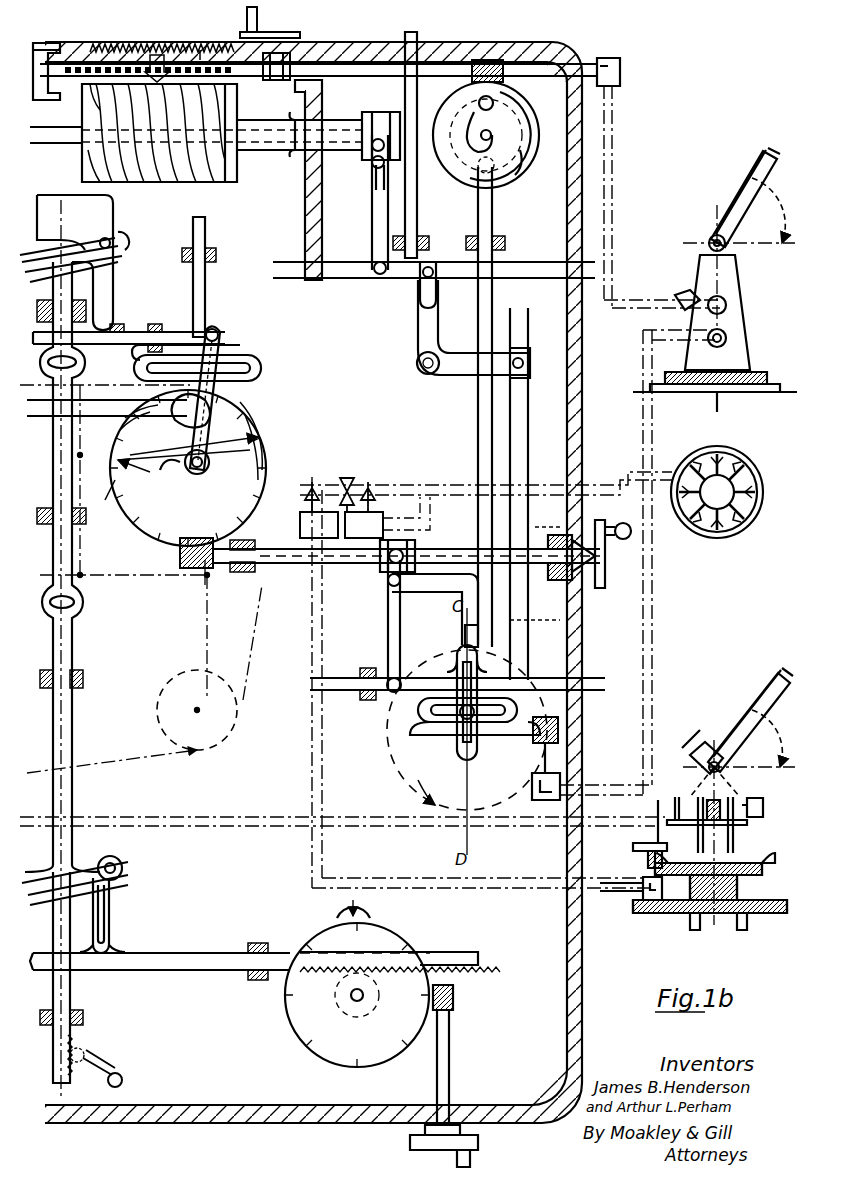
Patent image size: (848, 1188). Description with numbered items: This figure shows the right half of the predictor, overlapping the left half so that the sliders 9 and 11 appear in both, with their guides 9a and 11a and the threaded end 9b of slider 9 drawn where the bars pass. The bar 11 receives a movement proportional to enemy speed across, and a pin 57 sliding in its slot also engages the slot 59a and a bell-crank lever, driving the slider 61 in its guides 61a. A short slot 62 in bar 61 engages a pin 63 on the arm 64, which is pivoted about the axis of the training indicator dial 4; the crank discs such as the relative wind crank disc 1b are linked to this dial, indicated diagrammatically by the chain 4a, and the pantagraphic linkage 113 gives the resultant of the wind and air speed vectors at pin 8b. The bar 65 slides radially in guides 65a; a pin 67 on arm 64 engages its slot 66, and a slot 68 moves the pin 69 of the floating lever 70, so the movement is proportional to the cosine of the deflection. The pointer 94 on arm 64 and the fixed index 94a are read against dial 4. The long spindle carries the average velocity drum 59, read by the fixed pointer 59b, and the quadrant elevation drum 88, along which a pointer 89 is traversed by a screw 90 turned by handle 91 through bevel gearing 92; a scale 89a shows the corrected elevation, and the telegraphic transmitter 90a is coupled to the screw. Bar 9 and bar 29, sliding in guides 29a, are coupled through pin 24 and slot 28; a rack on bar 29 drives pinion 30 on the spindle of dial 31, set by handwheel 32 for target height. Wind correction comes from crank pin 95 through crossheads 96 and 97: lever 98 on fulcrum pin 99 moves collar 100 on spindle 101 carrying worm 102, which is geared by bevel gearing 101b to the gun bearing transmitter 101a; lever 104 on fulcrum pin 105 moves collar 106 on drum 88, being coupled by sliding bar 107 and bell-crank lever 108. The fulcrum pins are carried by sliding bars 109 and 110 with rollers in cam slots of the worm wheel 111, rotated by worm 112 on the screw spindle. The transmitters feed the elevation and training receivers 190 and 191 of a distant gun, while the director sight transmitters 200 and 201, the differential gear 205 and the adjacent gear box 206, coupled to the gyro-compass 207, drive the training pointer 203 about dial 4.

The relative wind crank disc 1b is at (190, 697).
The training indicator dial 4 is at (136, 568).
The chain 4a is at (245, 672).
The pin 8b is at (125, 542).
The bar 9 is at (70, 792).
The bearing for shaft 9 9a is at (83, 676).
The threaded end and crank of shaft 9 9b is at (95, 1082).
The bar 11 is at (53, 462).
The bearing and lever for shaft 11 11a is at (80, 300).
The pin 24 is at (115, 878).
The slot 28 is at (110, 936).
The bar 29 is at (152, 970).
The guides 29a is at (256, 980).
The pinion 30 is at (310, 1003).
The dial 31 is at (395, 945).
The handwheel 32 is at (478, 1142).
The pin 57 is at (95, 262).
The average velocity drum 59 is at (186, 352).
The slot 59a is at (128, 318).
The fixed pointer 59b is at (35, 45).
The slider 61 is at (110, 344).
The guides 61a is at (158, 324).
The slot 62 is at (220, 328).
The pin 63 is at (220, 340).
The arm 64 is at (187, 432).
The bar 65 is at (205, 292).
The guides 65a is at (208, 250).
The slot 66 is at (260, 368).
The pin 67 is at (225, 398).
The slot 68 is at (262, 420).
The pin 69 is at (262, 448).
The floating lever 70 is at (96, 416).
The quadrant elevation drum 88 is at (212, 178).
The pointer 89 is at (157, 55).
The scale 89a is at (205, 50).
The screw 90 is at (178, 62).
The telegraphic transmitter 90a is at (605, 58).
The handle 91 is at (265, 28).
The bevel gearing 92 is at (270, 80).
The pointer 94 is at (135, 535).
The fixed index 94a is at (110, 508).
The crank pin 95 is at (465, 712).
The slotted crosshead 96 is at (430, 722).
The slotted crosshead 97 is at (467, 770).
The lever 98 is at (392, 620).
The fulcrum pin 99 is at (387, 580).
The collar 100 is at (408, 540).
The spindle 101 is at (292, 564).
The gun bearing transmitter 101a is at (530, 785).
The bevel gearing 101b is at (575, 585).
The worm 102 is at (200, 560).
The lever 104 is at (375, 210).
The fulcrum pin 105 is at (372, 163).
The collar 106 is at (368, 115).
The sliding bar 107 is at (358, 278).
The bell-crank lever 108 is at (455, 372).
The sliding bar 109 is at (478, 440).
The sliding bar 110 is at (418, 200).
The worm wheel 111 is at (530, 133).
The worm 112 is at (485, 60).
The pantagraphic linkage 113 is at (224, 582).
The elevation receiver 190 is at (727, 303).
The training receiver 191 is at (727, 340).
The elevation transmitter 200 is at (762, 784).
The training transmitter 201 is at (645, 900).
The training pointer 203 is at (314, 484).
The differential gear 205 is at (356, 480).
The valve box 206 is at (385, 512).
The gyro-compass 207 is at (725, 529).